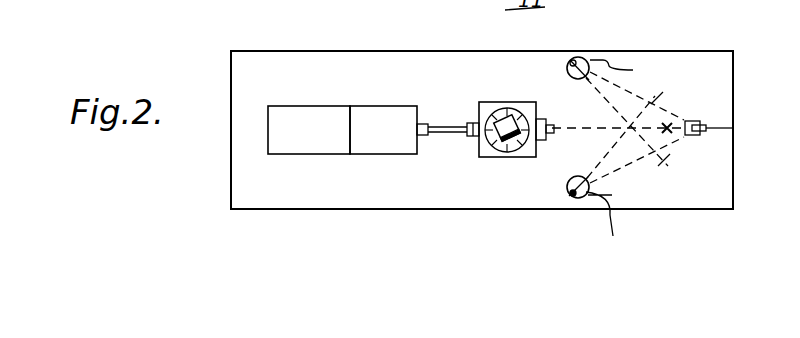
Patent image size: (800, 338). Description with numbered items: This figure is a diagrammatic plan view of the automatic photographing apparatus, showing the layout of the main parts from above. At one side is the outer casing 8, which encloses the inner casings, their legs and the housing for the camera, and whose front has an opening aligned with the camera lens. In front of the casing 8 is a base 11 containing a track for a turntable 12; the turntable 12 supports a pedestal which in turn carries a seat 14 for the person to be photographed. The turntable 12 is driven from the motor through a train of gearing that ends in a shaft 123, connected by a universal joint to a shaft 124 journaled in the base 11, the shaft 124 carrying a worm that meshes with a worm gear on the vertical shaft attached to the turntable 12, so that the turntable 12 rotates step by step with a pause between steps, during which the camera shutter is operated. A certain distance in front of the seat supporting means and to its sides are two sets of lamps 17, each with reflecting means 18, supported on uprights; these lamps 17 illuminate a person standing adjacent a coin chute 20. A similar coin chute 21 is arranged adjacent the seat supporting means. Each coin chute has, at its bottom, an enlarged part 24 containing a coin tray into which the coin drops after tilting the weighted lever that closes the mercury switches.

The casing 8 is at (311, 118).
The shaft 123 is at (443, 128).
The shaft 124 is at (478, 132).
The base 11 is at (484, 153).
The turntable 12 is at (505, 151).
The seat 14 is at (510, 114).
The lamps 17 is at (583, 57).
The reflecting means 18 is at (680, 73).
The coin chute 20 is at (706, 128).
The coin chute 21 is at (582, 160).
The enlarged part 24 is at (582, 108).